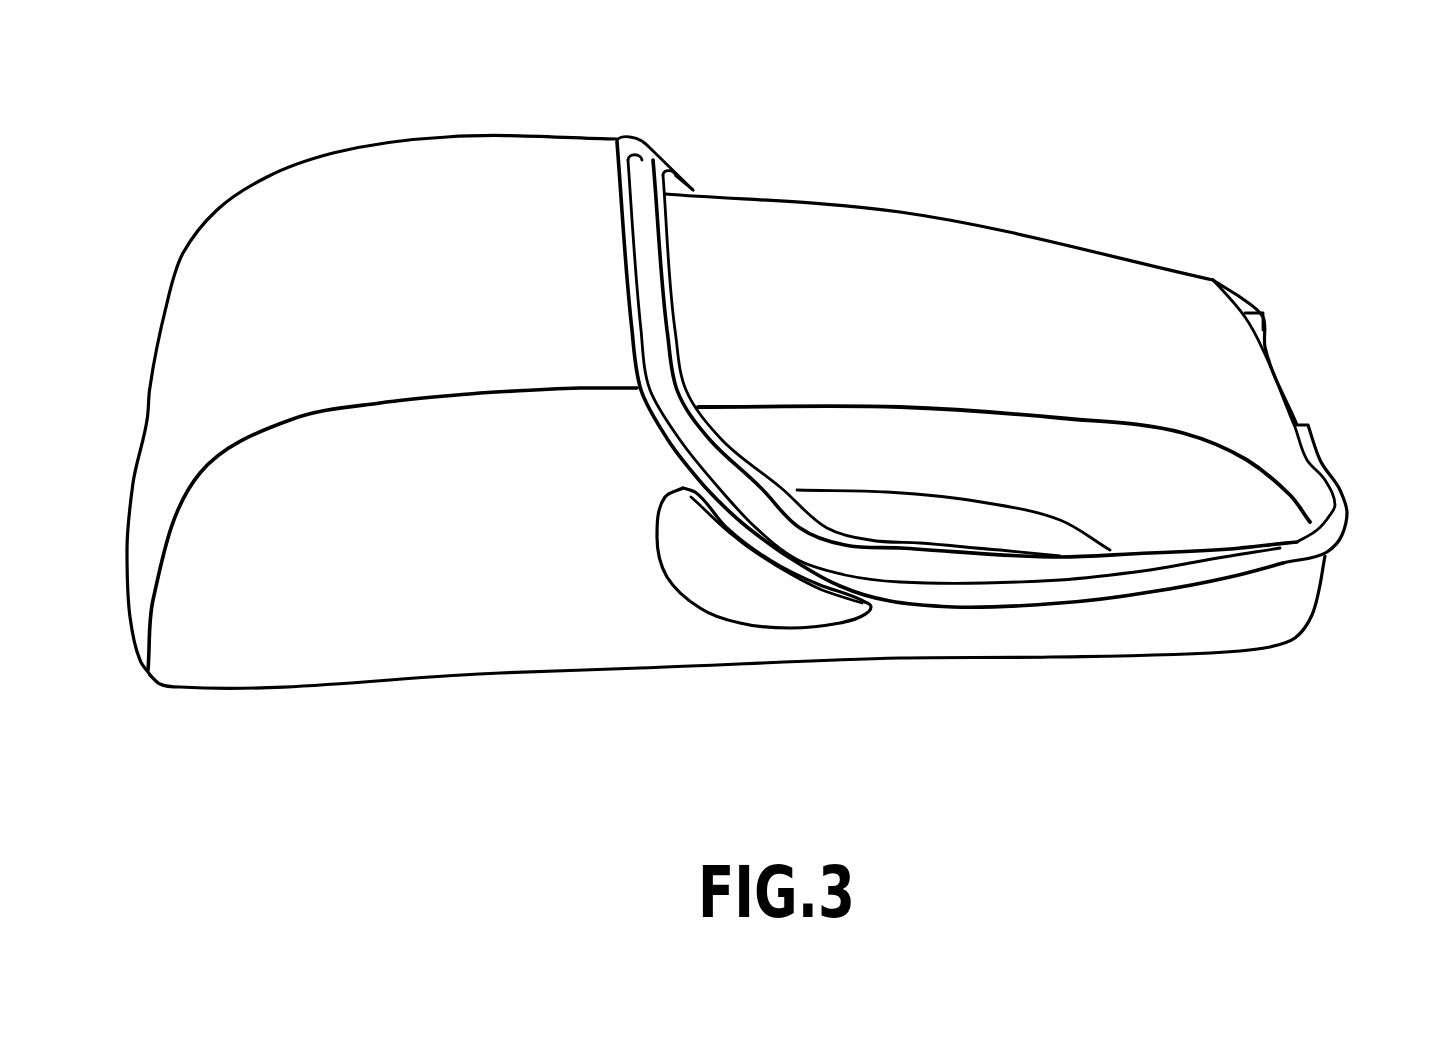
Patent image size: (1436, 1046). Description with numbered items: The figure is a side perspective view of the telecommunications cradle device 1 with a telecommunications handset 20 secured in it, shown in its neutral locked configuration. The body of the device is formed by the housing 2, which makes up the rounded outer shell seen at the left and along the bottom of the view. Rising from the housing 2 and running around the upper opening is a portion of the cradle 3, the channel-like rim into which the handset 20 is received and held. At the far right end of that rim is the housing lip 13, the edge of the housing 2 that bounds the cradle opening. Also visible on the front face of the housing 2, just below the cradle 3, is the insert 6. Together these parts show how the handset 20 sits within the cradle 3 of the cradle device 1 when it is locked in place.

The telecommunications cradle device 1 is at (781, 468).
The housing 2 is at (398, 568).
The cradle 3 is at (643, 160).
The insert 6 is at (765, 567).
The housing lip 13 is at (1327, 460).
The handset 20 is at (1003, 280).